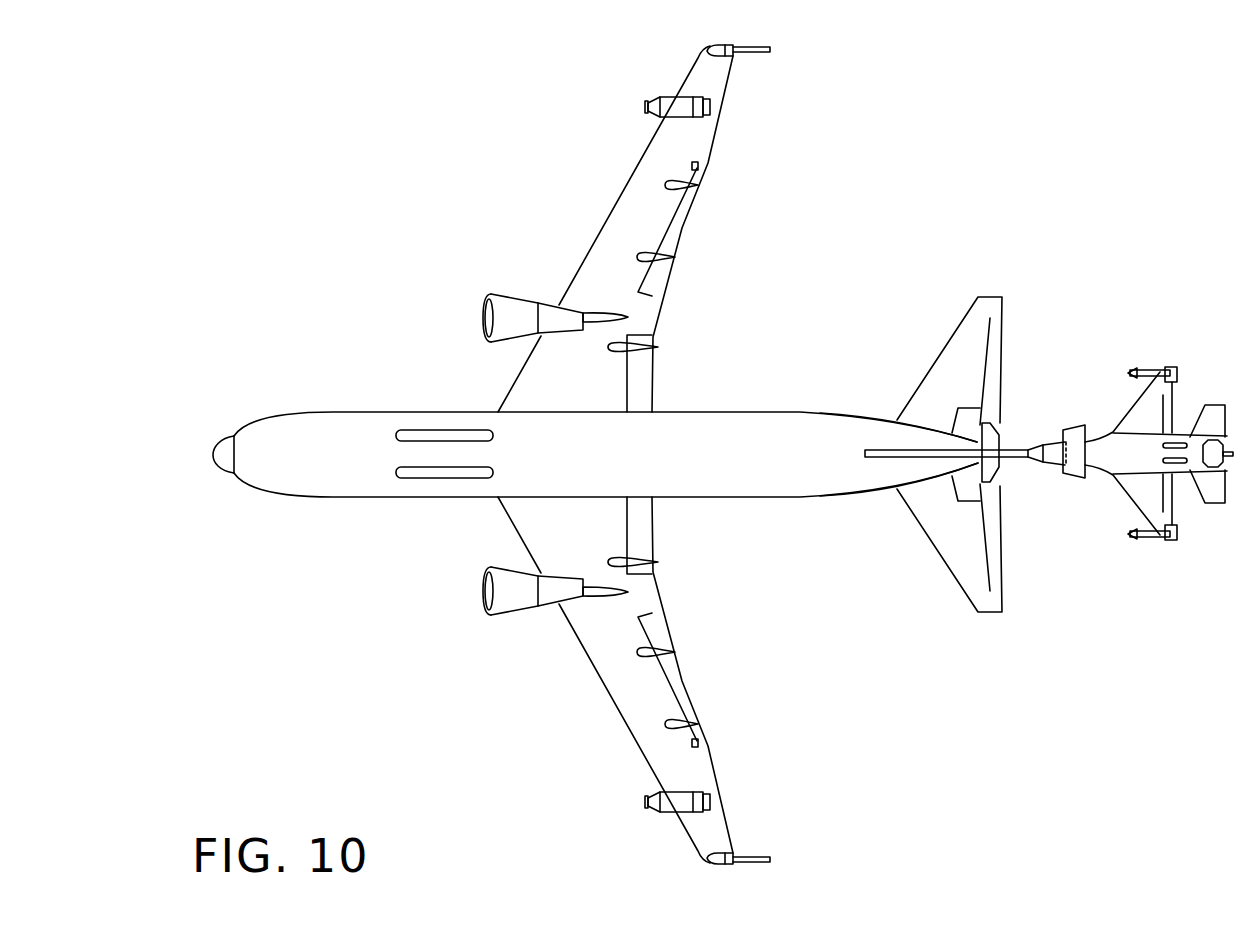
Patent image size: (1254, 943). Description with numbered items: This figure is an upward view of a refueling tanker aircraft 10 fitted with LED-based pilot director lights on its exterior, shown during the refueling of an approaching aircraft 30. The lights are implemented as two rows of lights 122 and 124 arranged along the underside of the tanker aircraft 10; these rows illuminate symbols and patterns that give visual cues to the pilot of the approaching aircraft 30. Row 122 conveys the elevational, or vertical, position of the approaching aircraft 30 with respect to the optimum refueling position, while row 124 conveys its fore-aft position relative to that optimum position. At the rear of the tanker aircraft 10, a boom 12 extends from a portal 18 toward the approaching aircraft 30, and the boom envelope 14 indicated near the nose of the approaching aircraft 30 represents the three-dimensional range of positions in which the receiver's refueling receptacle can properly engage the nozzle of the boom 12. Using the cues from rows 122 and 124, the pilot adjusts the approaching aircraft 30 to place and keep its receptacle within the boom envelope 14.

The refueling tanker aircraft 10 is at (296, 411).
The boom 12 is at (933, 450).
The boom envelope 14 is at (1072, 478).
The portal 18 is at (865, 451).
The approaching aircraft 30 is at (1155, 390).
The row of lights 122 is at (438, 478).
The row of lights 124 is at (430, 430).